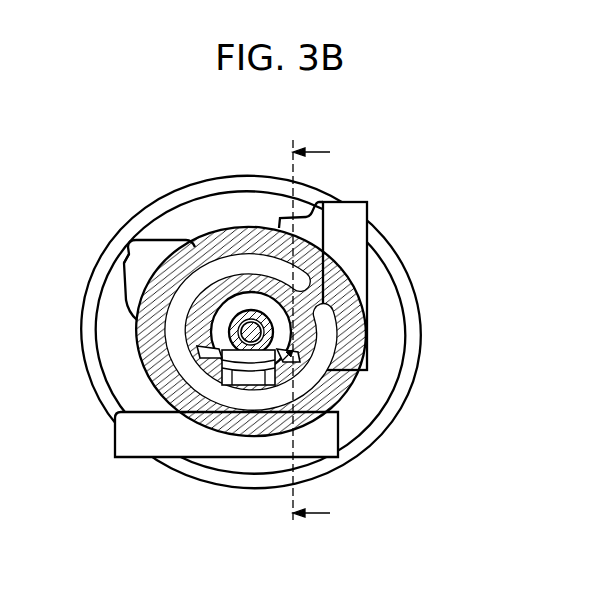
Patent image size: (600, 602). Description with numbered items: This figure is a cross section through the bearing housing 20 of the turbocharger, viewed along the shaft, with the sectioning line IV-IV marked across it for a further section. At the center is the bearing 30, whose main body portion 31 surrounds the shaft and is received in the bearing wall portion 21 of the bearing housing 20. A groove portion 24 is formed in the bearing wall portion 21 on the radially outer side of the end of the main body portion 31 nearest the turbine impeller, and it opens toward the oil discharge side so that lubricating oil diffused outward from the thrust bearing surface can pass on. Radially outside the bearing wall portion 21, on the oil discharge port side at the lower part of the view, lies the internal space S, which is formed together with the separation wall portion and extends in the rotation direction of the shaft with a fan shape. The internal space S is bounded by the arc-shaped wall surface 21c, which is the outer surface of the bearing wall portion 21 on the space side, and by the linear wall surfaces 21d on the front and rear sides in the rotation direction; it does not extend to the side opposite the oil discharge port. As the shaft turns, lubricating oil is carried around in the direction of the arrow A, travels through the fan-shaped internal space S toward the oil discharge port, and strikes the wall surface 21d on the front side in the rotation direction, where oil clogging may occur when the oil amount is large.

The bearing housing 20 is at (355, 201).
The bearing wall portion 21 is at (138, 312).
The arc-shaped wall surface 21c is at (126, 315).
The linear wall surfaces 21d is at (292, 357).
The groove portion 24 is at (250, 298).
The bearing 30 is at (197, 305).
The main body portion 31 is at (147, 287).
The internal space S is at (216, 377).
The arrow A is at (250, 387).
The line IV- IV is at (305, 332).